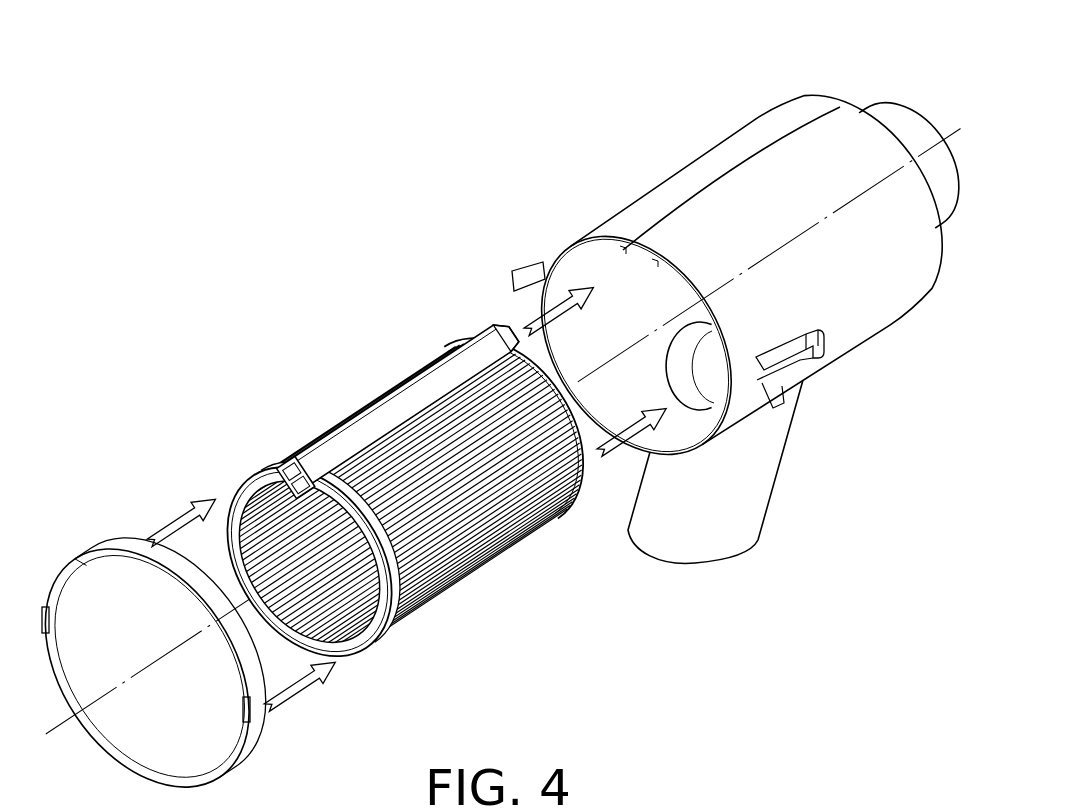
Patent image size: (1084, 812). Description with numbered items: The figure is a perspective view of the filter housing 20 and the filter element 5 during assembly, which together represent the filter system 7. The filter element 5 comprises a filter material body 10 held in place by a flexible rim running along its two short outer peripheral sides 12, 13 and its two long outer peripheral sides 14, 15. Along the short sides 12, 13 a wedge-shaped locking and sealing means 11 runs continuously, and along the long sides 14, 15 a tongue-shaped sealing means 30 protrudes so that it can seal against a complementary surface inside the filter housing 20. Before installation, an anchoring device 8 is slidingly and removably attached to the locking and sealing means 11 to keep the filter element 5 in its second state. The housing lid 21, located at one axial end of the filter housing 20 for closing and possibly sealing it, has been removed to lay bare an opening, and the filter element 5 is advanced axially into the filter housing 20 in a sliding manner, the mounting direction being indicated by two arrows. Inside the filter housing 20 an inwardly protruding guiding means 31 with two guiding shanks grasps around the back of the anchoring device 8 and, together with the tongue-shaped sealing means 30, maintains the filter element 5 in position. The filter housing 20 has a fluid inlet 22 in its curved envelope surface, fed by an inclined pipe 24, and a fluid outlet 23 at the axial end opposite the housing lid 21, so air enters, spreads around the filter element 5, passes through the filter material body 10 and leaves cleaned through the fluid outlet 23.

The filter element 5 is at (277, 293).
The filter system 7 is at (420, 160).
The anchoring device 8 is at (241, 442).
The filter material body 10 is at (465, 527).
The locking and sealing means 11 is at (408, 355).
The short outer peripheral side 12 is at (340, 440).
The short outer peripheral side 13 is at (389, 350).
The long outer peripheral side 14 is at (278, 473).
The long outer peripheral side 15 is at (488, 340).
The filter housing 20 is at (742, 286).
The housing lid 21 is at (100, 593).
The fluid inlet 22 is at (702, 390).
The fluid outlet 23 is at (929, 106).
The pipe 24 is at (737, 485).
The tongue-shaped sealing means 30 is at (468, 335).
The guiding means 31 is at (612, 255).